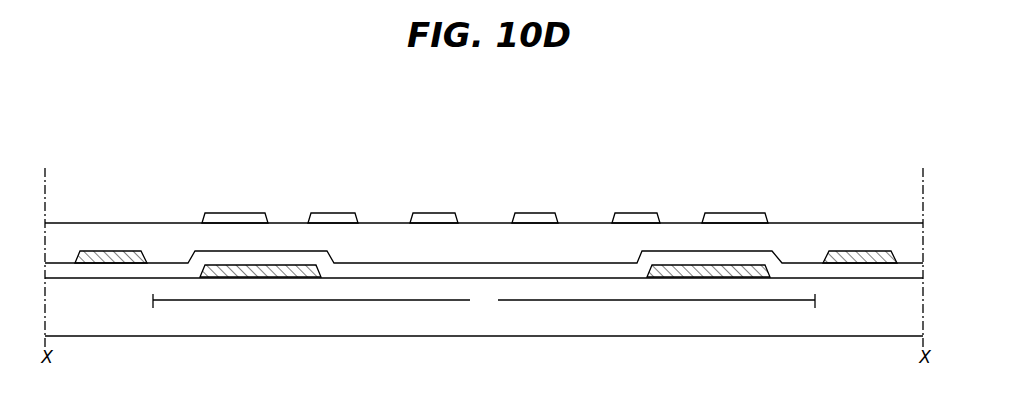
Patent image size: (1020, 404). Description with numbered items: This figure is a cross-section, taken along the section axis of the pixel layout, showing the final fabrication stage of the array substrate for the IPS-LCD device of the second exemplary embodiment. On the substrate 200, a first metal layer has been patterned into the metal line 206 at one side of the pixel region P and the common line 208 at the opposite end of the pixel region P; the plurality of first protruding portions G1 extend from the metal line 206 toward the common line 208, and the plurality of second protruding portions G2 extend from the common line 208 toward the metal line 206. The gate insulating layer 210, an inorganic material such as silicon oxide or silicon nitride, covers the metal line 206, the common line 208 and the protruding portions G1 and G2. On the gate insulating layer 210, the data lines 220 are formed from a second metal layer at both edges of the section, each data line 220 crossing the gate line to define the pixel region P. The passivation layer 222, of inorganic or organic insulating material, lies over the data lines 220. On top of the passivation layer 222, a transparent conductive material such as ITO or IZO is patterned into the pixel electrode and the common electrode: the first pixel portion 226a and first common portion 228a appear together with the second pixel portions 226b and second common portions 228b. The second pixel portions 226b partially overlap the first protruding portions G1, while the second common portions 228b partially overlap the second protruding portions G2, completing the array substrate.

The substrate 200 is at (862, 328).
The metal line 206 is at (212, 278).
The common line 208 is at (752, 278).
The gate insulating layer 210 is at (493, 263).
The data line 220 is at (116, 251).
The passivation layer 222 is at (584, 213).
The first pixel portion 226a is at (752, 218).
The second pixel portion 226b is at (327, 218).
The first common portion 228a is at (215, 218).
The second common portion 228b is at (435, 218).
The first protruding portion G1 is at (308, 278).
The second protruding portion G2 is at (670, 278).
The pixel region P is at (484, 301).